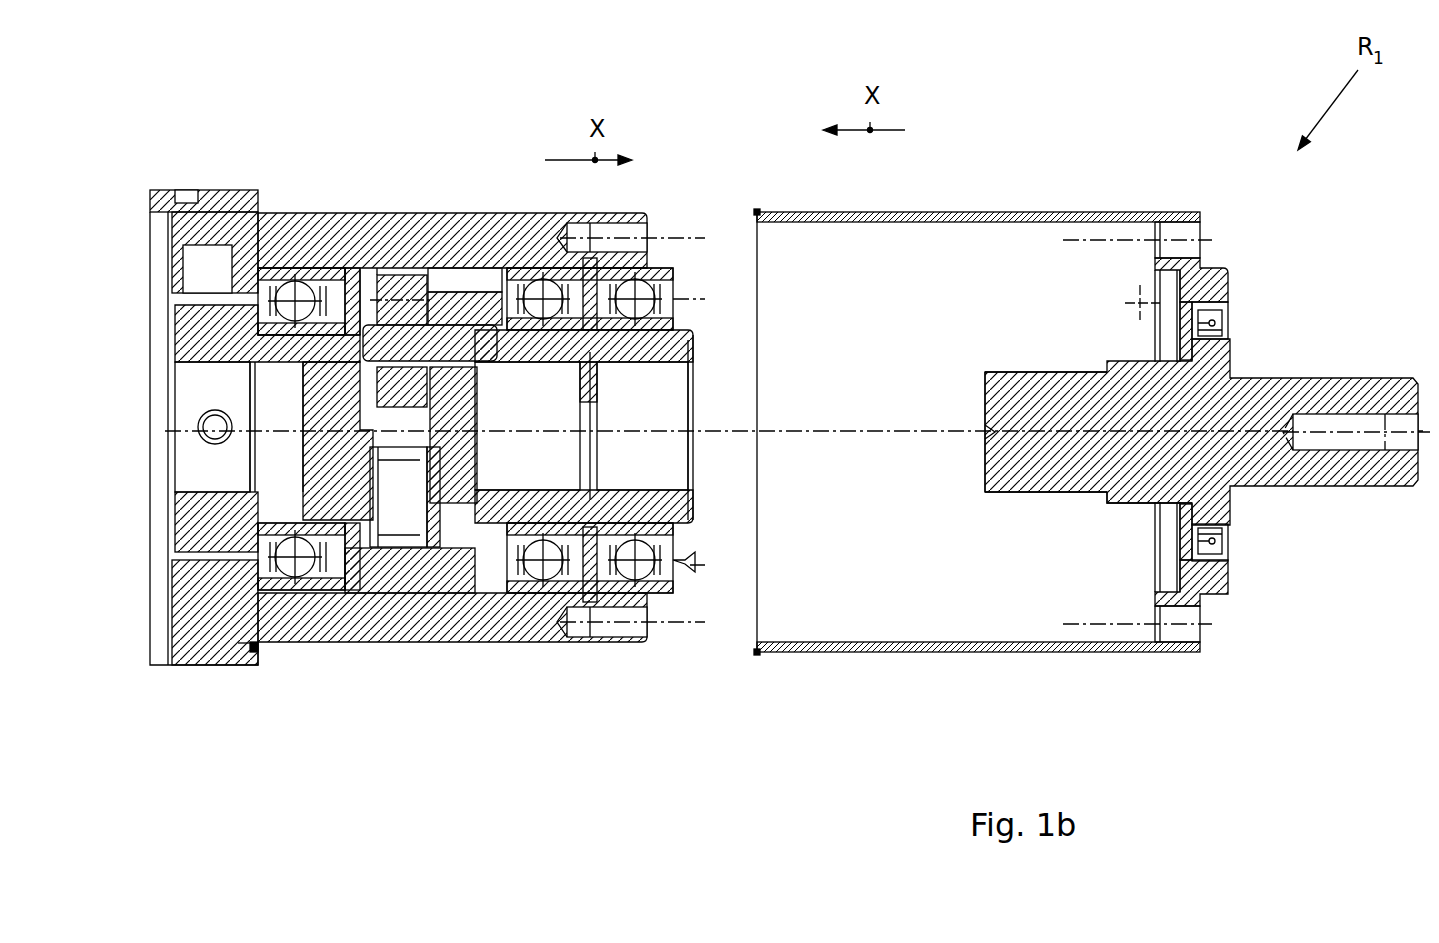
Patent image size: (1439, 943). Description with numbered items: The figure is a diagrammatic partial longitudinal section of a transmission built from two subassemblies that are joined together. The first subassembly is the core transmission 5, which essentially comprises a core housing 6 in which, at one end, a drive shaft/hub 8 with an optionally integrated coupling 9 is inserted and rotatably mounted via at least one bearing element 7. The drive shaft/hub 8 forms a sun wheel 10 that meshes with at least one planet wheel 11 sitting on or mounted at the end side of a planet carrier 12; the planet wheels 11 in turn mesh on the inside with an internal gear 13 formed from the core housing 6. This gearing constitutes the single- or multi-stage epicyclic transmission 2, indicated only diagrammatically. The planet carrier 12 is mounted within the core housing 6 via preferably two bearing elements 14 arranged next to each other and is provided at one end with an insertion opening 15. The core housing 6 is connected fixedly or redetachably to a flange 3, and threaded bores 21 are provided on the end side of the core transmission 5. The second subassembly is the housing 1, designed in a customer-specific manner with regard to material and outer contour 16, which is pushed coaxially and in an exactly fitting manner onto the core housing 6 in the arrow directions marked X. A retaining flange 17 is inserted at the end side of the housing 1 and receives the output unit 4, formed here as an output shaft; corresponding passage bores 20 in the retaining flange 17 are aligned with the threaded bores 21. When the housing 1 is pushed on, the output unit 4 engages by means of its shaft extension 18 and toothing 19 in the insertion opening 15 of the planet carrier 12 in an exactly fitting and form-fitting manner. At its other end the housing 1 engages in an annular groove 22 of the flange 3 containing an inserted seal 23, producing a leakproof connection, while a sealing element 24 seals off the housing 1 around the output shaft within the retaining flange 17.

The housing 1 is at (1019, 204).
The epicyclic transmission 2 is at (415, 580).
The flange 3 is at (200, 598).
The output unit 4 is at (1207, 414).
The core transmission 5 is at (412, 198).
The core housing 6 is at (325, 240).
The bearing element 7 is at (298, 275).
The drive shaft/hub 8 is at (200, 325).
The coupling 9 is at (200, 483).
The sun wheel 10 is at (402, 445).
The planet wheel 11 is at (398, 290).
The planet carrier 12 is at (470, 300).
The internal gear 13 is at (452, 265).
The bearing elements 14 is at (527, 275).
The insertion opening 15 is at (688, 405).
The outer contour 16 is at (937, 215).
The retaining flange 17 is at (1228, 272).
The shaft extension 18 is at (1032, 470).
The toothing 19 is at (1133, 503).
The passage bores 20 is at (1190, 232).
The threaded bores 21 is at (635, 238).
The annular groove 22 is at (258, 650).
The seal 23 is at (248, 643).
The sealing element 24 is at (1225, 552).